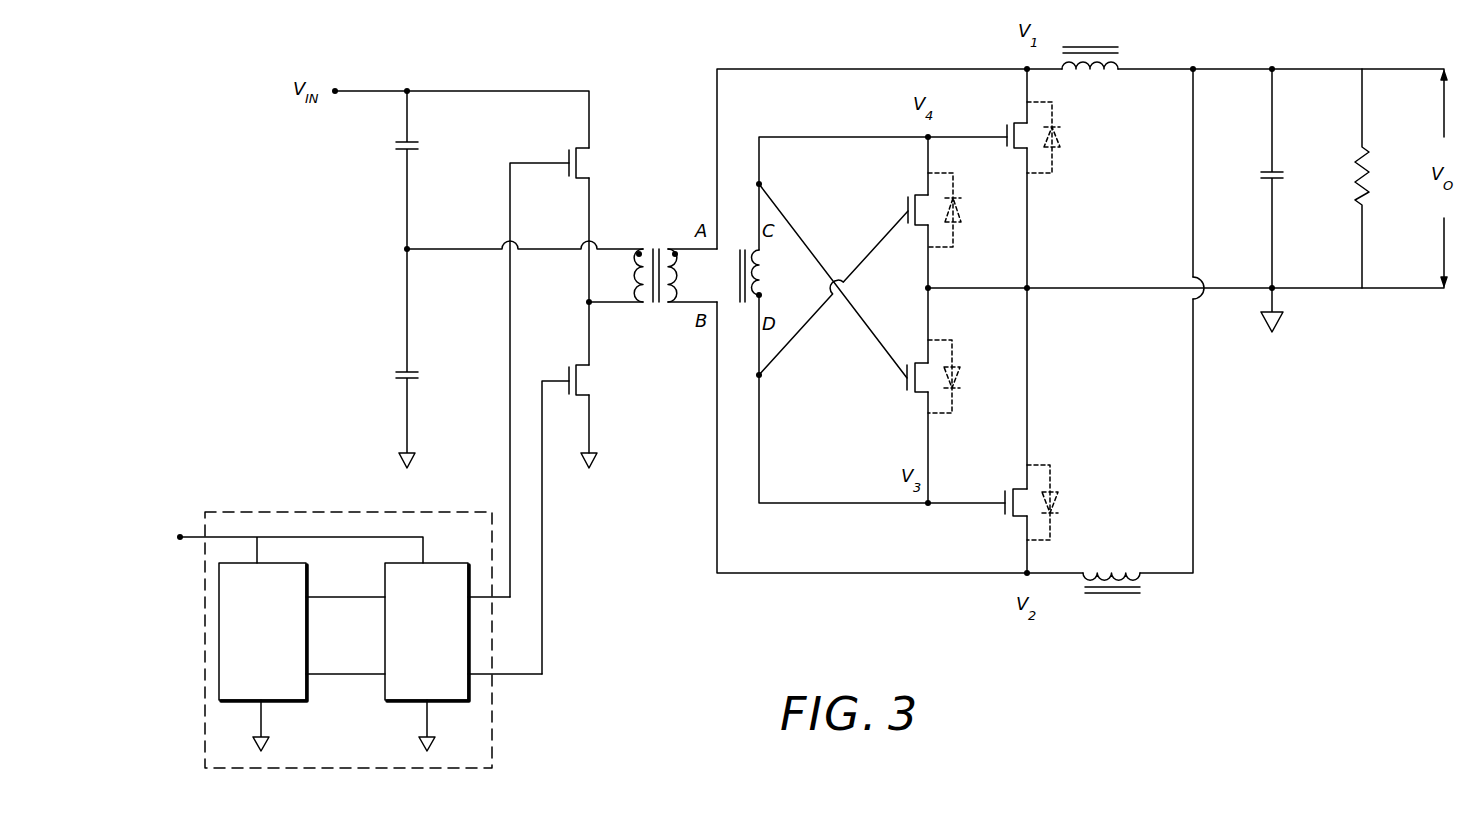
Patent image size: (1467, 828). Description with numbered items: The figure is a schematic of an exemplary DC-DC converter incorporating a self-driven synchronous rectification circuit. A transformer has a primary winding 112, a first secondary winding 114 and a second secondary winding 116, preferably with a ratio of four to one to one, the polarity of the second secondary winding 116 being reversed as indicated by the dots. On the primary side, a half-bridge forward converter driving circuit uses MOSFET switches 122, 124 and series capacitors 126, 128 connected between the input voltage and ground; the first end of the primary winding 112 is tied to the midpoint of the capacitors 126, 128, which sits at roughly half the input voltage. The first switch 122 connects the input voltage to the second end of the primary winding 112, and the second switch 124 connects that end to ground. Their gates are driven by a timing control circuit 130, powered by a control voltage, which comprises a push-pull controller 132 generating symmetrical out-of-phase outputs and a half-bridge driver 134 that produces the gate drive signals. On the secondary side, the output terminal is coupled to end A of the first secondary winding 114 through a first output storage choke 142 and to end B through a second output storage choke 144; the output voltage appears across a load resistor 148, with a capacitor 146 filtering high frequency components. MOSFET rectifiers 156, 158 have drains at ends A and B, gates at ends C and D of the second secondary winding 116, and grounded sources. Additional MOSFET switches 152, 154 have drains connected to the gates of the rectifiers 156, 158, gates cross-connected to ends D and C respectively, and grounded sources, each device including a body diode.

The primary winding 112 is at (643, 249).
The first secondary winding 114 is at (668, 303).
The second secondary winding 116 is at (757, 303).
The first switch 122 is at (590, 148).
The second switch 124 is at (590, 367).
The capacitor 126 is at (400, 143).
The capacitor 128 is at (400, 372).
The timing control circuit 130 is at (363, 640).
The push-pull controller 132 is at (310, 632).
The half-bridge driver 134 is at (470, 632).
The first output storage choke 142 is at (1120, 68).
The second output storage choke 144 is at (1140, 575).
The capacitor 146 is at (1275, 170).
The load resistor 148 is at (1365, 150).
The first switch 152 is at (913, 195).
The second switch 154 is at (912, 393).
The first rectifier 156 is at (1014, 123).
The second rectifier 158 is at (1013, 517).